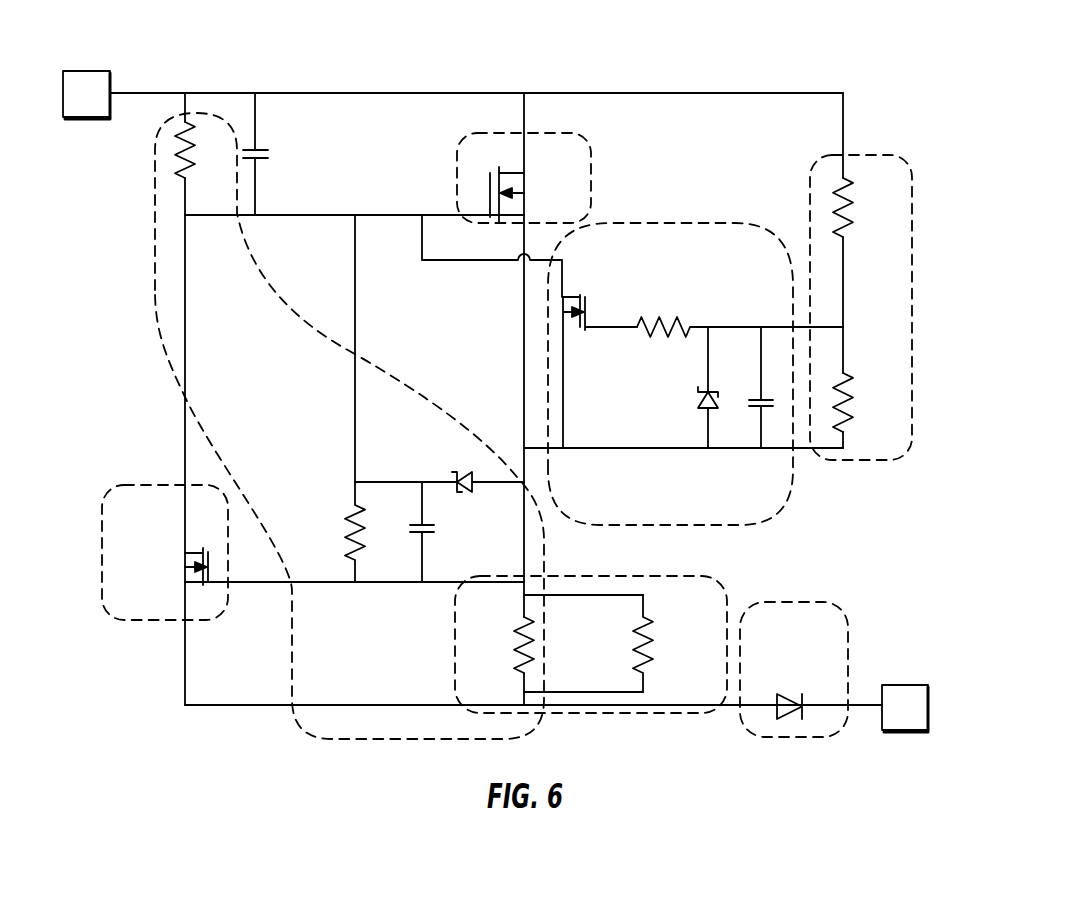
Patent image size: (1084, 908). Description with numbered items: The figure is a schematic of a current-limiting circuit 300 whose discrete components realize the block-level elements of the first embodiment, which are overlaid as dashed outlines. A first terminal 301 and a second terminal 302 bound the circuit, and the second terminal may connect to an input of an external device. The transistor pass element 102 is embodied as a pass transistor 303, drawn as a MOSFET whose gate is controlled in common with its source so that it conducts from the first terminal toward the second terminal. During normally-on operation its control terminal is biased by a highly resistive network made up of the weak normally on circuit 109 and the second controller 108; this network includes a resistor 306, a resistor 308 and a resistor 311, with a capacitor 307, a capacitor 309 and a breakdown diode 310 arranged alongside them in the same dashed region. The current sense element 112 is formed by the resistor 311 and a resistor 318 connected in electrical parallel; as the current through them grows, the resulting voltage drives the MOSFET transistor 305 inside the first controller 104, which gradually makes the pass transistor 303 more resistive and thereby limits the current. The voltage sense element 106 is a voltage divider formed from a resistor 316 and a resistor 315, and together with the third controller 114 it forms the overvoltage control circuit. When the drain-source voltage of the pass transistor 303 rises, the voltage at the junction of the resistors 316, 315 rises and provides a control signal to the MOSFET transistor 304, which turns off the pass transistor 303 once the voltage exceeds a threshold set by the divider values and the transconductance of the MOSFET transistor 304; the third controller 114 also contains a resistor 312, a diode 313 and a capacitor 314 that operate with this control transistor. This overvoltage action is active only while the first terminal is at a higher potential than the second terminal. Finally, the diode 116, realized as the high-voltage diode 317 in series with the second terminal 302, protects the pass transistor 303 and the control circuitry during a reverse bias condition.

The current-limiting circuit 300 is at (248, 55).
The first terminal 301 is at (97, 71).
The second terminal 302 is at (905, 685).
The pass transistor 303 is at (514, 192).
The MOSFET transistor 304 is at (563, 291).
The MOSFET transistor 305 is at (199, 555).
The resistor 306 is at (183, 146).
The capacitor 307 is at (265, 150).
The resistor 308 is at (343, 528).
The capacitor 309 is at (430, 527).
The breakdown diode 310 is at (460, 470).
The resistor 311 is at (518, 632).
The resistor 312 is at (663, 320).
The diode 313 is at (698, 398).
The capacitor 314 is at (753, 396).
The resistor 315 is at (852, 410).
The resistor 316 is at (852, 192).
The high-voltage diode 317 is at (788, 716).
The resistor 318 is at (637, 641).
The transistor pass element 102 is at (572, 166).
The first controller 104 is at (163, 524).
The voltage sense element 106 is at (895, 316).
The second controller 108 is at (349, 426).
The weak normally on circuit 109 is at (312, 410).
The current sense element 112 is at (708, 661).
The third controller 114 is at (695, 263).
The diode 116 is at (815, 649).